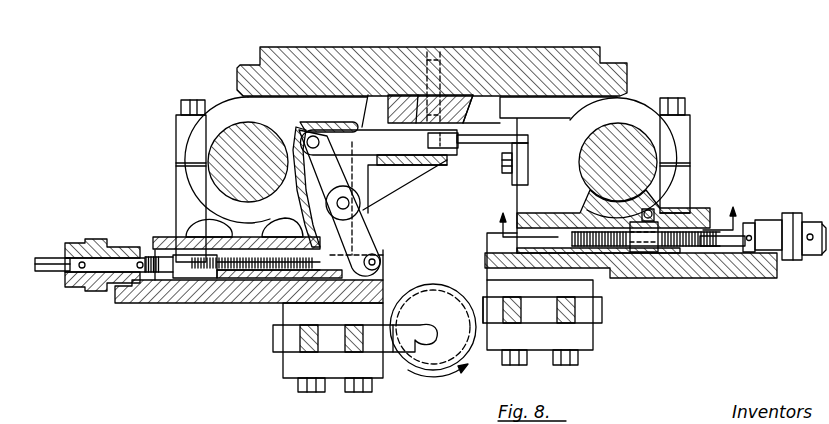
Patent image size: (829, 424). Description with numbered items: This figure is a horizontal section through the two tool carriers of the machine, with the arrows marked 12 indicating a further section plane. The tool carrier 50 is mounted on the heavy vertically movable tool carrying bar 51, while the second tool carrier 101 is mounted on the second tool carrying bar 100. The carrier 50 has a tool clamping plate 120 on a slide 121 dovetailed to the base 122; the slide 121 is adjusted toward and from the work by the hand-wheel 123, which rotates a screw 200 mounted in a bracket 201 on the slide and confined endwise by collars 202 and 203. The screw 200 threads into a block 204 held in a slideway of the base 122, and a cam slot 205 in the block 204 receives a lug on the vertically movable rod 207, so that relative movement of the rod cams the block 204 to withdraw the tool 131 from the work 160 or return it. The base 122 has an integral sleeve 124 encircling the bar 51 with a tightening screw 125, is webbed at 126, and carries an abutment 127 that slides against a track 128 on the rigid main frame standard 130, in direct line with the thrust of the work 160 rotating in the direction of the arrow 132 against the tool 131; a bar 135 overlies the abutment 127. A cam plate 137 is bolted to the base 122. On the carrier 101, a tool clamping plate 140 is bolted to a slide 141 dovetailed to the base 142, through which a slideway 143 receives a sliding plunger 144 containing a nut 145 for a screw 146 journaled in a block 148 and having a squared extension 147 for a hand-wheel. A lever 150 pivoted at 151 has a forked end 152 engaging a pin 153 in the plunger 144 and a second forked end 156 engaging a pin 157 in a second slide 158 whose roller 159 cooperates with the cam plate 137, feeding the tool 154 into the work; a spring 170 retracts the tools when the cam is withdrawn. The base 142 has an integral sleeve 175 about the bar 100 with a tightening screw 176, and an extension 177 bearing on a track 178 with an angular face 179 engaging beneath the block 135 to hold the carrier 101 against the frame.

The section line 12 is at (616, 213).
The tool carrier 50 is at (692, 175).
The tool carrying bar 51 is at (640, 147).
The second tool carrying bar 100 is at (215, 147).
The tool carrier 101 is at (177, 198).
The tool clamping plate 120 is at (585, 337).
The slide 121 is at (690, 268).
The base 122 is at (645, 207).
The hand-wheel 123 is at (823, 256).
The integral sleeve 124 is at (634, 110).
The tightening screw 125 is at (685, 100).
The web 126 is at (541, 127).
The abutment 127 is at (488, 100).
The track 128 is at (474, 92).
The main frame standard 130 is at (598, 50).
The tool 131 is at (478, 328).
The arrow 132 is at (433, 384).
The bar 135 is at (437, 112).
The cam plate 137 is at (484, 144).
The tool clamping plate 140 is at (290, 367).
The slide 141 is at (263, 292).
The base 142 is at (224, 230).
The slideway 143 is at (203, 270).
The sliding plunger 144 is at (252, 280).
The nut 145 is at (210, 270).
The screw 146 is at (182, 277).
The squared extension 147 is at (43, 274).
The block 148 is at (110, 288).
The lever 150 is at (365, 230).
The pivot 151 is at (350, 206).
The forked end 152 is at (382, 256).
The pin 153 is at (382, 263).
The tool 154 is at (417, 343).
The forked end 156 is at (340, 132).
The pin 157 is at (307, 138).
The second slide 158 is at (412, 150).
The roller 159 is at (458, 150).
The work 160 is at (444, 293).
The spring 170 is at (156, 252).
The integral sleeve 175 is at (227, 110).
The tightening screw 176 is at (182, 107).
The extension 177 is at (366, 96).
The track 178 is at (392, 95).
The angular face 179 is at (430, 100).
The screw 200 is at (728, 243).
The bracket 201 is at (770, 220).
The collar 202 is at (748, 223).
The collar 203 is at (808, 222).
The block 204 is at (648, 252).
The cam slot 205 is at (647, 228).
The rod 207 is at (690, 193).